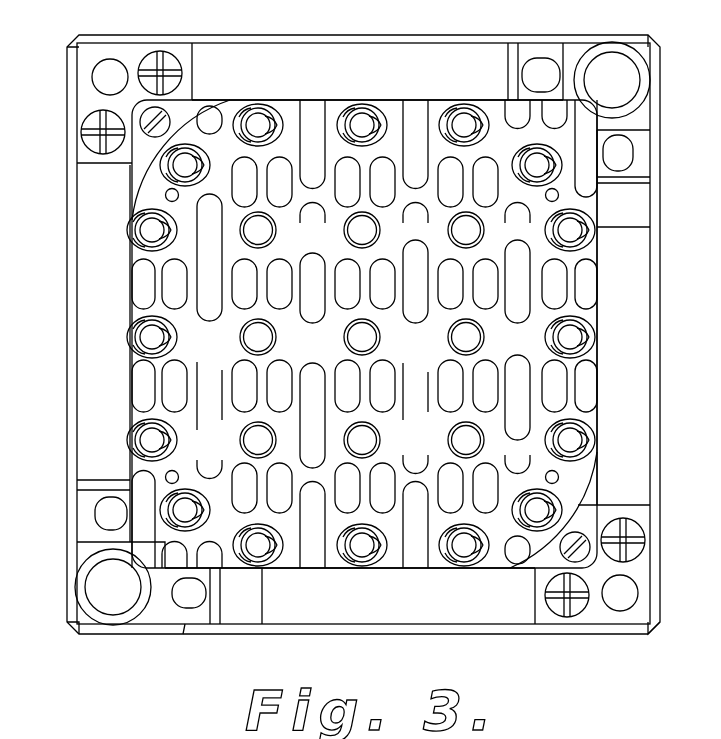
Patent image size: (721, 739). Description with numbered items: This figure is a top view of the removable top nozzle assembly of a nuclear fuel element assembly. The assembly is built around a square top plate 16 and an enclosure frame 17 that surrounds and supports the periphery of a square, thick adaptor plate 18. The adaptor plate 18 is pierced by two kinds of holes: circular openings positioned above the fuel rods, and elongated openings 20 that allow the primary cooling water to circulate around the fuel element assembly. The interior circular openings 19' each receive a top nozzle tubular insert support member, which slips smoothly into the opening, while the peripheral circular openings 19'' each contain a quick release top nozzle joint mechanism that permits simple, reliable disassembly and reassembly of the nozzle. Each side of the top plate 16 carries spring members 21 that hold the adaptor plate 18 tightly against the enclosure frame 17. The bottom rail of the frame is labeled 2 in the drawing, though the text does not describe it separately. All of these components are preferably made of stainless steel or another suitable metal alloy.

The bottom rail 2 is at (388, 620).
The square top plate 16 is at (86, 528).
The enclosure frame 17 is at (68, 208).
The adaptor plate 18 is at (585, 258).
The interior circular openings 19' is at (370, 335).
The peripheral circular openings 19'' is at (374, 330).
The elongated openings 20 is at (527, 365).
The spring members 21 is at (254, 50).